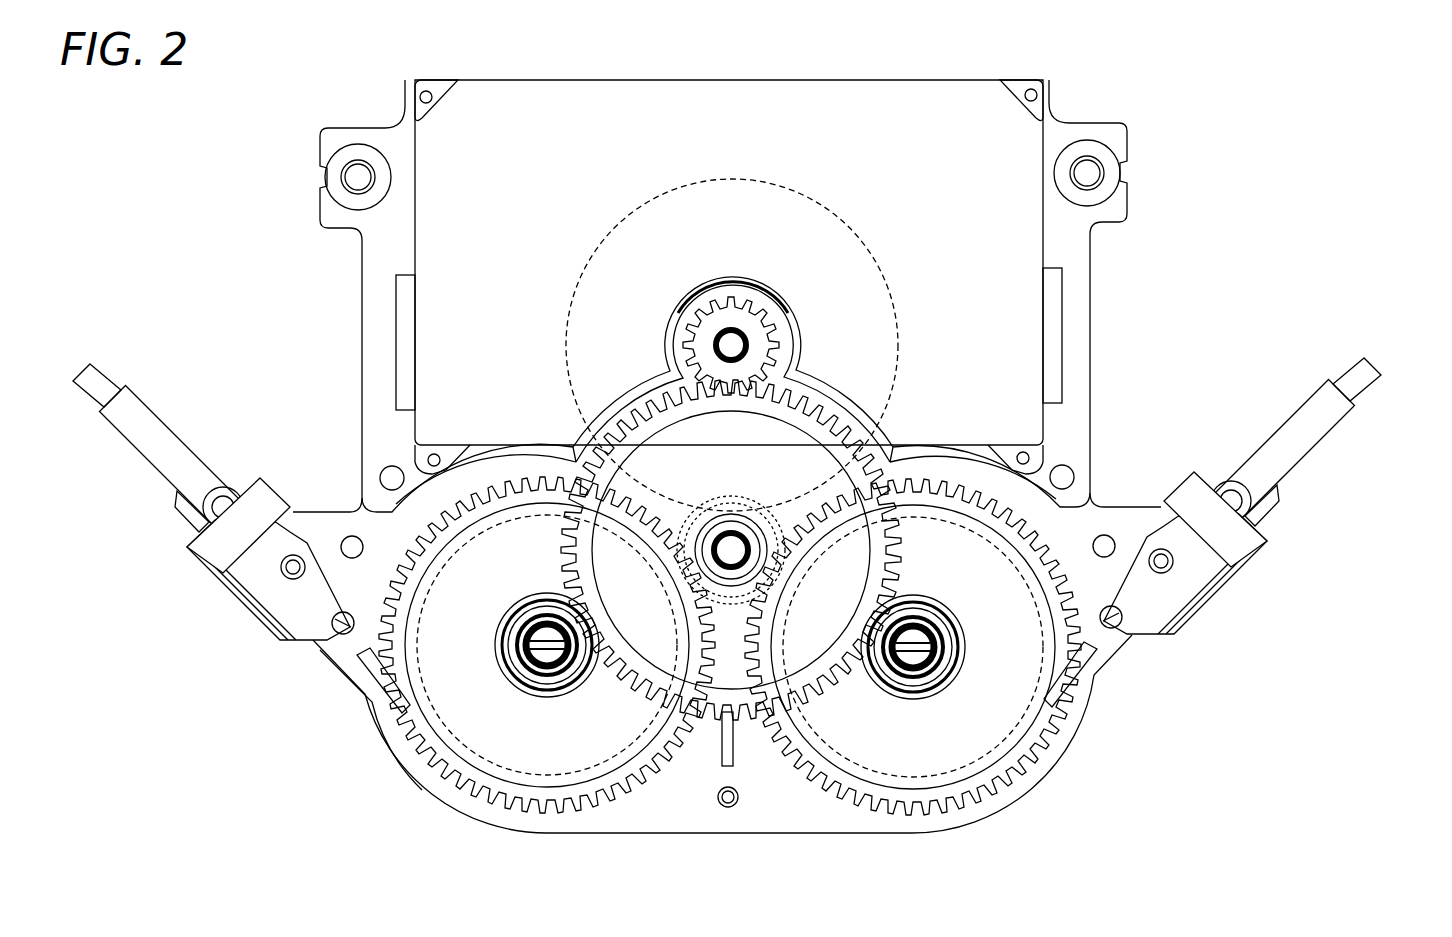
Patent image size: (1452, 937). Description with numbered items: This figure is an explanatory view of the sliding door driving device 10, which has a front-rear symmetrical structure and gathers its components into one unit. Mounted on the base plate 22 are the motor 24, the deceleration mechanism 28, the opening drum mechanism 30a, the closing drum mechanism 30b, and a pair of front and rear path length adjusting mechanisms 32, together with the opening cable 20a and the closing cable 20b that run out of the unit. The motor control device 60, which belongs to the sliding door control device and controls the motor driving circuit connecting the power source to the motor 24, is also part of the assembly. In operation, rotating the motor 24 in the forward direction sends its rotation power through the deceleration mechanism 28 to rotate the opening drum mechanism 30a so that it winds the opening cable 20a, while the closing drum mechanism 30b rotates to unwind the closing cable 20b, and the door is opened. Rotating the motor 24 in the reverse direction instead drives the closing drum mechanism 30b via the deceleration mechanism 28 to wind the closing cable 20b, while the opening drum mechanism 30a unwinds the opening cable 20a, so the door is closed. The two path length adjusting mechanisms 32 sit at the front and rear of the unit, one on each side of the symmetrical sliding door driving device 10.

The sliding door driving device 10 is at (1266, 146).
The opening cable 20a is at (365, 660).
The closing cable 20b is at (1110, 657).
The base plate 22 is at (1084, 277).
The motor 24 is at (832, 213).
The deceleration mechanism 28 is at (1130, 759).
The opening drum mechanism 30a is at (462, 752).
The closing drum mechanism 30b is at (957, 772).
The path length adjusting mechanism 32 is at (168, 682).
The motor control device 60 is at (878, 100).